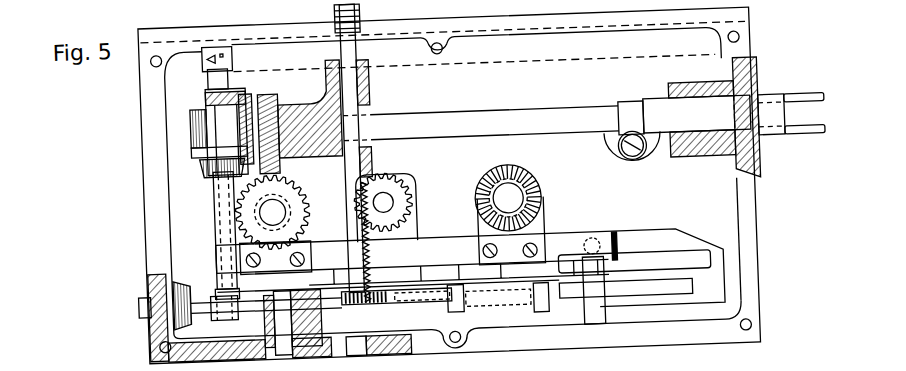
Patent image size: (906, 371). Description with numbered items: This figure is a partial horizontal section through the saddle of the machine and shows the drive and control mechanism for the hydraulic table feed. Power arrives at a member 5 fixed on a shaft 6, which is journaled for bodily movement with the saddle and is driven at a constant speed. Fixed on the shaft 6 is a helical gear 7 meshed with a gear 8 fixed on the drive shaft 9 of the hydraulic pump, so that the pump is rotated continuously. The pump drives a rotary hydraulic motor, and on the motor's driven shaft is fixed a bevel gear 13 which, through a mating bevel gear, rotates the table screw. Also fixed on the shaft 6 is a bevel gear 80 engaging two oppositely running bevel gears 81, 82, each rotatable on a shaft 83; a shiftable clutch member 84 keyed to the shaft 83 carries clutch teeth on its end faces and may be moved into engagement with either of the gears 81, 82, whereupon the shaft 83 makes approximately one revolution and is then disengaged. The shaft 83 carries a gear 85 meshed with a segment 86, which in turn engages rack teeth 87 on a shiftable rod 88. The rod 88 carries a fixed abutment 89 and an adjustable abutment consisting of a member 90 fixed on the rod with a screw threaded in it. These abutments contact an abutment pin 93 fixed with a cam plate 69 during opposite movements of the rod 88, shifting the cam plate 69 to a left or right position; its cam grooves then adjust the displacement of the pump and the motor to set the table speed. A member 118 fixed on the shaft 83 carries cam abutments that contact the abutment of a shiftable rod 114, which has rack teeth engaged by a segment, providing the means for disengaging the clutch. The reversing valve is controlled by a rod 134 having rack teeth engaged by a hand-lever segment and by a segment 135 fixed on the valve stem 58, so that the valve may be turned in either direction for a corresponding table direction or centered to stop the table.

The member 5 is at (760, 114).
The shaft 6 is at (572, 128).
The helical gear 7 is at (273, 105).
The gear 8 is at (296, 231).
The drive shaft 9 is at (277, 215).
The bevel gear 13 is at (525, 210).
The valve stem 58 is at (383, 208).
The cam plate 69 is at (648, 280).
The bevel gear 80 is at (238, 104).
The bevel gear 81 is at (236, 92).
The bevel gear 82 is at (205, 173).
The shaft 83 is at (215, 256).
The shiftable clutch member 84 is at (196, 160).
The gear 85 is at (190, 323).
The segment 86 is at (265, 323).
The rack teeth 87 is at (334, 313).
The shiftable rod 88 is at (366, 314).
The abutment 89 is at (550, 337).
The member 90 is at (442, 321).
The abutment pin 93 is at (496, 311).
The shiftable rod 114 is at (187, 128).
The member 118 is at (204, 65).
The rod 134 is at (364, 181).
The segment 135 is at (400, 214).